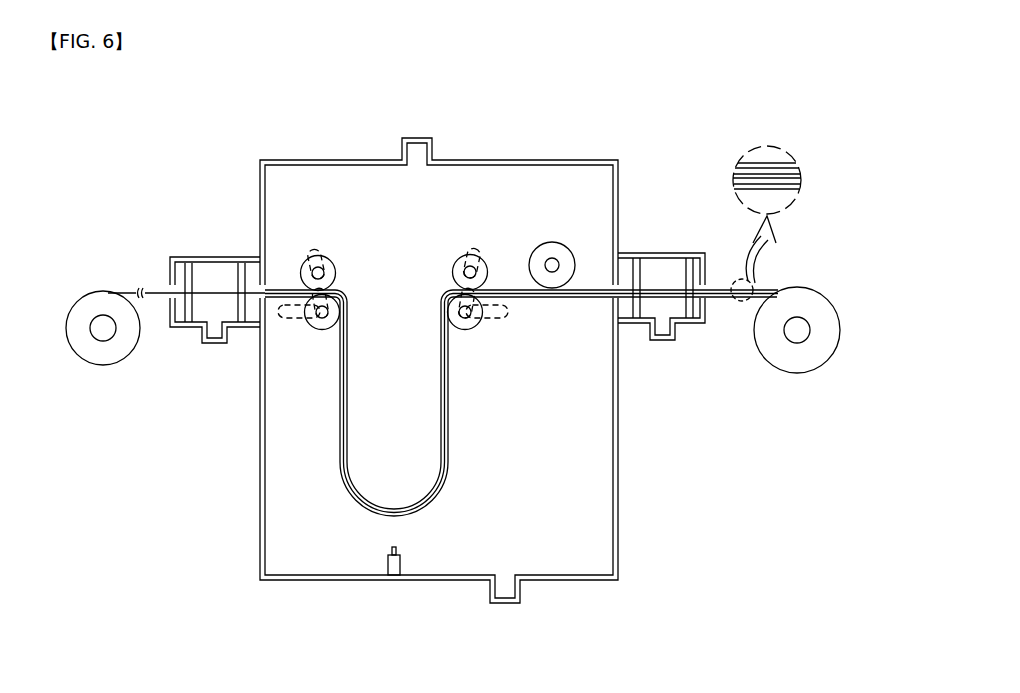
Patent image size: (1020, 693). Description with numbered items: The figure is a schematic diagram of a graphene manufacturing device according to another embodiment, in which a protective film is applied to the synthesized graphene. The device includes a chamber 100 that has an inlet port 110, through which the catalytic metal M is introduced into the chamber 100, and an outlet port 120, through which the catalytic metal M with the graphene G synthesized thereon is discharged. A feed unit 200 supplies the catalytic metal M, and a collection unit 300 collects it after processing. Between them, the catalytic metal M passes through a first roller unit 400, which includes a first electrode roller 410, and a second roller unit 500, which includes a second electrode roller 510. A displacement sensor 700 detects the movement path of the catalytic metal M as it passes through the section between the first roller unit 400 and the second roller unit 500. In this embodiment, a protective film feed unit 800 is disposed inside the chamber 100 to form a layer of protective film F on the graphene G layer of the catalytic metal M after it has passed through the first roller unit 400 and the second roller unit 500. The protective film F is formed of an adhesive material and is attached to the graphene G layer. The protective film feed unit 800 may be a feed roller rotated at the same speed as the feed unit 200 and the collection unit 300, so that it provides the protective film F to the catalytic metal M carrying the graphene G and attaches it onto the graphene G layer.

The chamber 100 is at (314, 152).
The inlet port 110 is at (212, 246).
The outlet port 120 is at (652, 244).
The feed unit 200 is at (72, 284).
The collection unit 300 is at (839, 290).
The first roller unit 400 is at (325, 306).
The first electrode roller 410 is at (332, 258).
The second roller unit 500 is at (467, 307).
The second electrode roller 510 is at (457, 258).
The displacement sensor 700 is at (388, 565).
The protective film feed unit 800 is at (551, 235).
The catalytic metal M is at (160, 290).
The protective film F is at (790, 162).
The graphene G is at (803, 176).